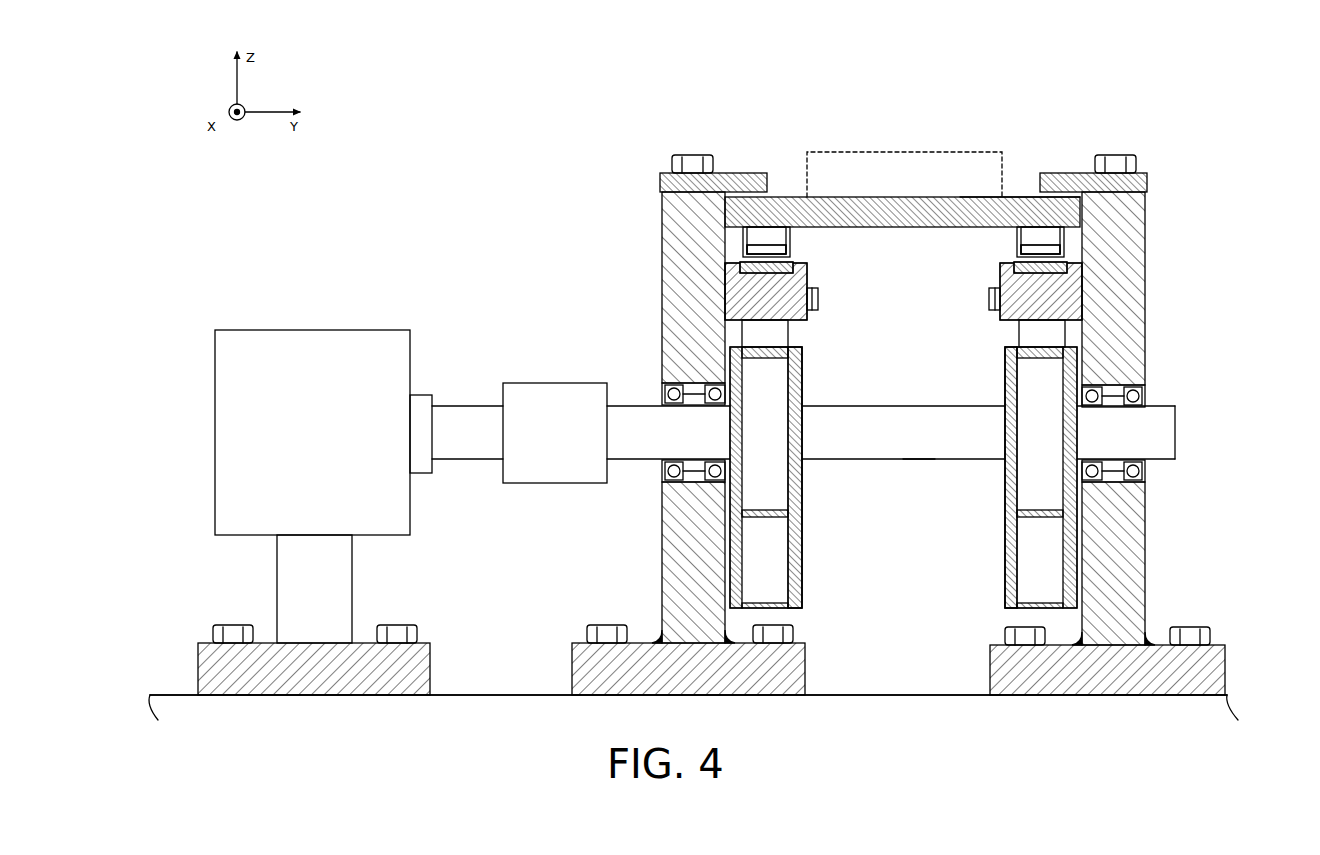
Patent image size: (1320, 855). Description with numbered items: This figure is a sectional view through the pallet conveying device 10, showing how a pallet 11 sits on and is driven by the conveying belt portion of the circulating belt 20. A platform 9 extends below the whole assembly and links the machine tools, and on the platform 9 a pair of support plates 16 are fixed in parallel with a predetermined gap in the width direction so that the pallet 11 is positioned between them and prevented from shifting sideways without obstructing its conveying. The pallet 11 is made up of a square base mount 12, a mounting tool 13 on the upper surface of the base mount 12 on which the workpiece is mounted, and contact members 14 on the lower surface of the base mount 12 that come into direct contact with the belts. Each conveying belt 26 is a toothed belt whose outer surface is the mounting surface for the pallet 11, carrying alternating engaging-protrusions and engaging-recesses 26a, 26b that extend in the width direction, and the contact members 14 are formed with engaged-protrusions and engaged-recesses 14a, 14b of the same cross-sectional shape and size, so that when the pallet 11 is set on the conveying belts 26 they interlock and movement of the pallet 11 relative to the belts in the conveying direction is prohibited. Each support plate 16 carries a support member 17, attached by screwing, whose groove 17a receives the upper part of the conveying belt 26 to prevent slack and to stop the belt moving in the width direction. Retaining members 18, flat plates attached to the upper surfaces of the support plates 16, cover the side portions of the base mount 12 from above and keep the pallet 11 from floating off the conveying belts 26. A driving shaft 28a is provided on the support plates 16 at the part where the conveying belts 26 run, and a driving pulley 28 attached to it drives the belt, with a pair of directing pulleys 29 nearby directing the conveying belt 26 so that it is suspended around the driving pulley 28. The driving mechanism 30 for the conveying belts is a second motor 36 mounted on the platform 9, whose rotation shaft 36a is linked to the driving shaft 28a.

The platform 9 is at (881, 694).
The pallet conveying device 10 is at (603, 117).
The pallet 11 is at (1006, 196).
The base mount 12 is at (835, 151).
The mounting tool 13 is at (1027, 196).
The contact member 14 is at (791, 238).
The engaged-protrusion 14a is at (795, 285).
The engaged-recess 14b is at (903, 291).
The support plate 16 is at (670, 300).
The support member 17 is at (819, 293).
The groove 17a is at (795, 267).
The retaining member 18 is at (724, 172).
The circulating belt 20 is at (777, 473).
The conveying belt 26 is at (789, 332).
The engaging-protrusion 26a is at (757, 262).
The engaging-recess 26b is at (903, 249).
The driving pulley 28 is at (803, 373).
The driving shaft 28a is at (917, 461).
The directing pulley 29 is at (803, 588).
The driving mechanism 30 is at (404, 326).
The second motor 36 is at (411, 369).
The rotation shaft 36a is at (483, 405).